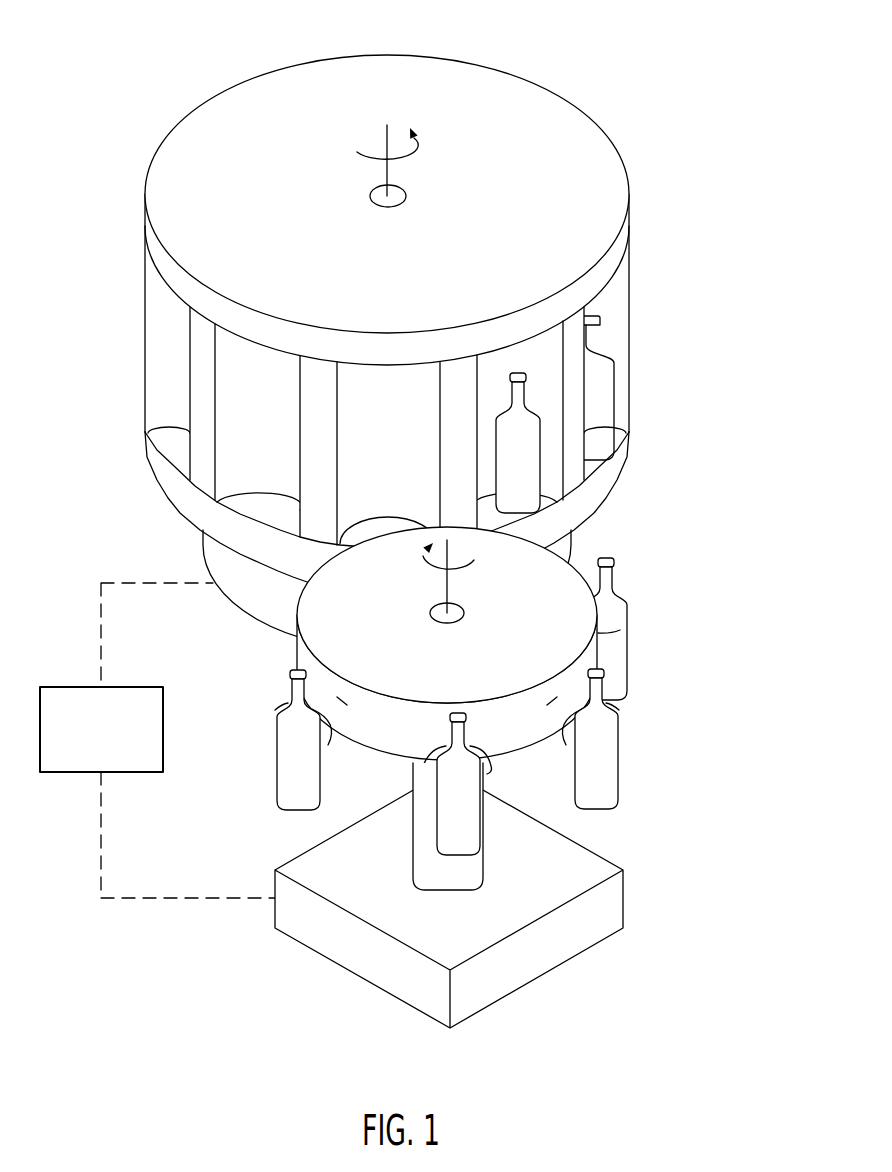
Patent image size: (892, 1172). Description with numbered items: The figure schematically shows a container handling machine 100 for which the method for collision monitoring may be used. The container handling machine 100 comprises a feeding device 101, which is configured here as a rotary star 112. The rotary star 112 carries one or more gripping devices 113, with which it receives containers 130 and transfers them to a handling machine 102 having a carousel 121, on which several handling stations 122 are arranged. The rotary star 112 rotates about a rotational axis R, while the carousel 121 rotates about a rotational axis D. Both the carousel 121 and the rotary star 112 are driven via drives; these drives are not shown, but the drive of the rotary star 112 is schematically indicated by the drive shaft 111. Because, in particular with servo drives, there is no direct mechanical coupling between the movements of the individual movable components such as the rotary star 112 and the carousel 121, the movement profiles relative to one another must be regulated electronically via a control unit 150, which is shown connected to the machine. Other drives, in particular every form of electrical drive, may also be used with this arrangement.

The container handling machine 100 is at (682, 64).
The feeding device 101 is at (646, 613).
The handling machine 102 is at (514, 60).
The drive shaft 111 is at (423, 847).
The rotary star 112 is at (566, 540).
The gripping device 113 is at (342, 703).
The carousel 121 is at (165, 177).
The handling station 122 is at (165, 357).
The container 130 is at (497, 700).
The control unit 150 is at (163, 710).